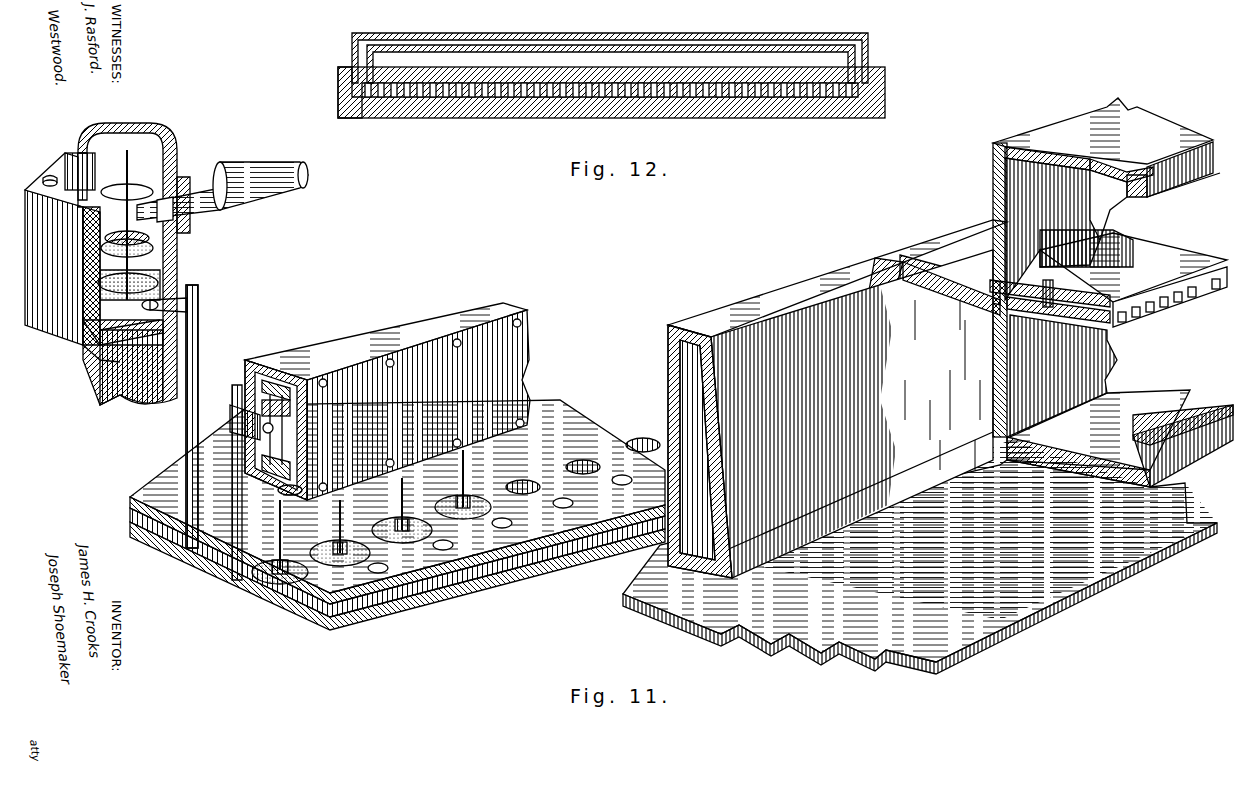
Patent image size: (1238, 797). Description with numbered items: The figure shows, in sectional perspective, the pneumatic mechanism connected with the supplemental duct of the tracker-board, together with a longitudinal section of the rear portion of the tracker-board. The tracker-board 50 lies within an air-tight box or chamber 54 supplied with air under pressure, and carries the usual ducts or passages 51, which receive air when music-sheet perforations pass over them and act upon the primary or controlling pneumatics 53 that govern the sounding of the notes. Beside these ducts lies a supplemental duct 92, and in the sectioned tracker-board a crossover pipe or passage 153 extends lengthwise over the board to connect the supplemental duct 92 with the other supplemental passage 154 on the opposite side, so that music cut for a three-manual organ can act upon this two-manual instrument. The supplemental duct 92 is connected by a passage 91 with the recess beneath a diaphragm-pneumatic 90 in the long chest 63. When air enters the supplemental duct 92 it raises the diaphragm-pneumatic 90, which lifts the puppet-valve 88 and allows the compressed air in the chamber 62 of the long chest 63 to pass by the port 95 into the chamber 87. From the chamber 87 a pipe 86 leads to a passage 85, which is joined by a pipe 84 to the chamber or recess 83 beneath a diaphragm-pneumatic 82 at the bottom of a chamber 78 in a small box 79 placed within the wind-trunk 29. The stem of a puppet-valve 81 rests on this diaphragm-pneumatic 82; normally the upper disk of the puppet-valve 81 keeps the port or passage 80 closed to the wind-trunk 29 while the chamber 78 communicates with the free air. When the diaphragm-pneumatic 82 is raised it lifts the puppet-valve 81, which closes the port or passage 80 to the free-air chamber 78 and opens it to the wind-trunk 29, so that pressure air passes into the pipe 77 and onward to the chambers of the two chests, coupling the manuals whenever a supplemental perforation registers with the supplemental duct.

In FIG. 12, the crossover pipe or passage 153 is at (545, 40).
In FIG. 12, the supplemental passage 154 is at (852, 70).
In FIG. 12, the tracker-board 50 is at (885, 90).
In FIG. 11, the tracker-board 50 is at (1133, 278).
In FIG. 12, the ducts or passages 51 is at (474, 100).
In FIG. 11, the ducts or passages 51 is at (1181, 303).
In FIG. 12, the supplemental duct 92 is at (345, 102).
In FIG. 11, the supplemental duct 92 is at (1115, 325).
In FIG. 11, the wind-trunk 29 is at (150, 145).
In FIG. 11, the small box 79 is at (60, 249).
In FIG. 11, the pipe 77 is at (222, 182).
In FIG. 11, the puppet-valve 81 is at (165, 178).
In FIG. 11, the port or passage 80 is at (148, 238).
In FIG. 11, the chamber 78 is at (165, 270).
In FIG. 11, the diaphragm-pneumatic 82 is at (190, 305).
In FIG. 11, the pipe 84 is at (200, 352).
In FIG. 11, the chamber or recess 83 is at (122, 322).
In FIG. 11, the chamber 62 is at (260, 395).
In FIG. 11, the port 95 is at (245, 412).
In FIG. 11, the long chest 63 is at (387, 401).
In FIG. 11, the chamber 87 is at (345, 500).
In FIG. 11, the puppet-valve 88 is at (290, 497).
In FIG. 11, the pipe 86 is at (250, 510).
In FIG. 11, the passage 85 is at (205, 560).
In FIG. 11, the diaphragm-pneumatic 90 is at (285, 587).
In FIG. 11, the passage 91 is at (543, 568).
In FIG. 11, the primary or controlling pneumatics 53 is at (372, 550).
In FIG. 11, the air-tight box or chamber 54 is at (1110, 200).